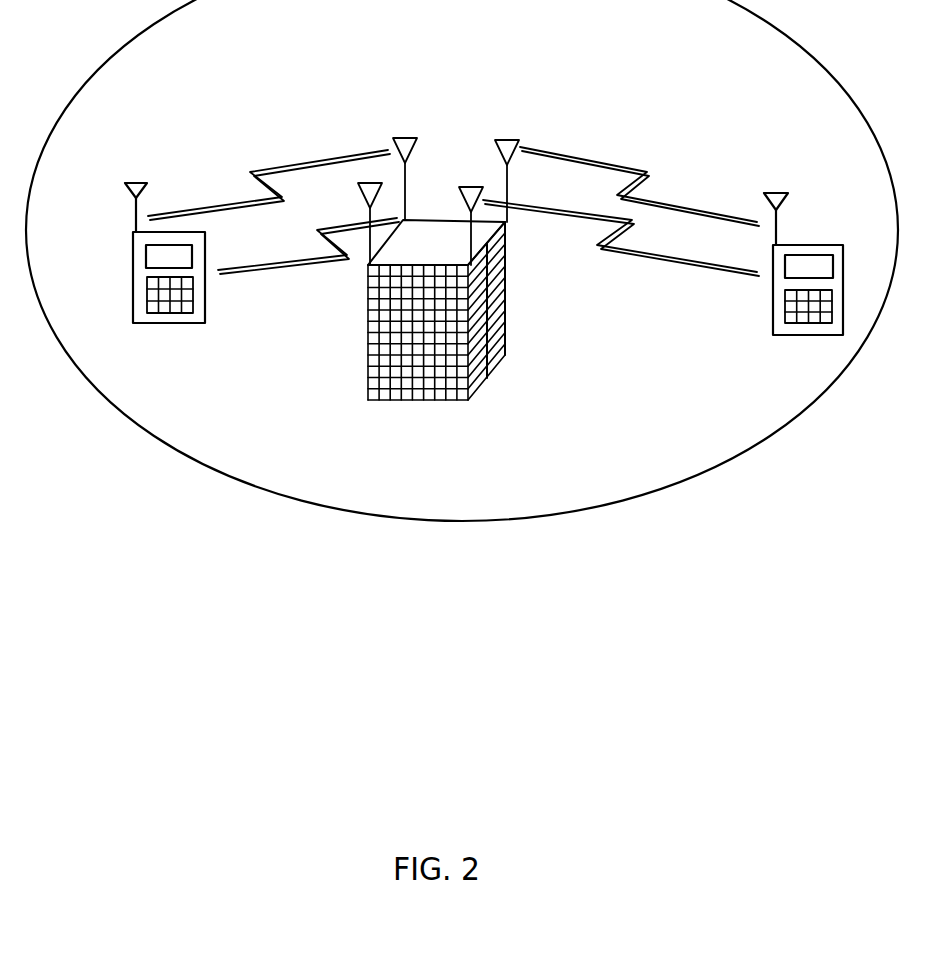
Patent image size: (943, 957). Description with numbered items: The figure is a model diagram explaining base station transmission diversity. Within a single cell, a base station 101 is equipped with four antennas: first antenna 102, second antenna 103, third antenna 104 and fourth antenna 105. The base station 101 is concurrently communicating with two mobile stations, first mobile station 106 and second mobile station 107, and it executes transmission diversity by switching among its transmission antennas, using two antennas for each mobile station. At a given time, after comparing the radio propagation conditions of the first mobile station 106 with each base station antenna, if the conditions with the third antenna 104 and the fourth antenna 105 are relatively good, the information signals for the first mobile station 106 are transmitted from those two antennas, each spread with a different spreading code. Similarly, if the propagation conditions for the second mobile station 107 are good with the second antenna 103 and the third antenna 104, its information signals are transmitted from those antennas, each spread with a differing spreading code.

The base station 101 is at (420, 400).
The antenna (1) 102 is at (370, 183).
The antenna (2) 103 is at (400, 138).
The antenna (3) 104 is at (505, 140).
The antenna (4) 105 is at (470, 186).
The mobile station (1) 106 is at (772, 299).
The mobile station (2) 107 is at (133, 313).